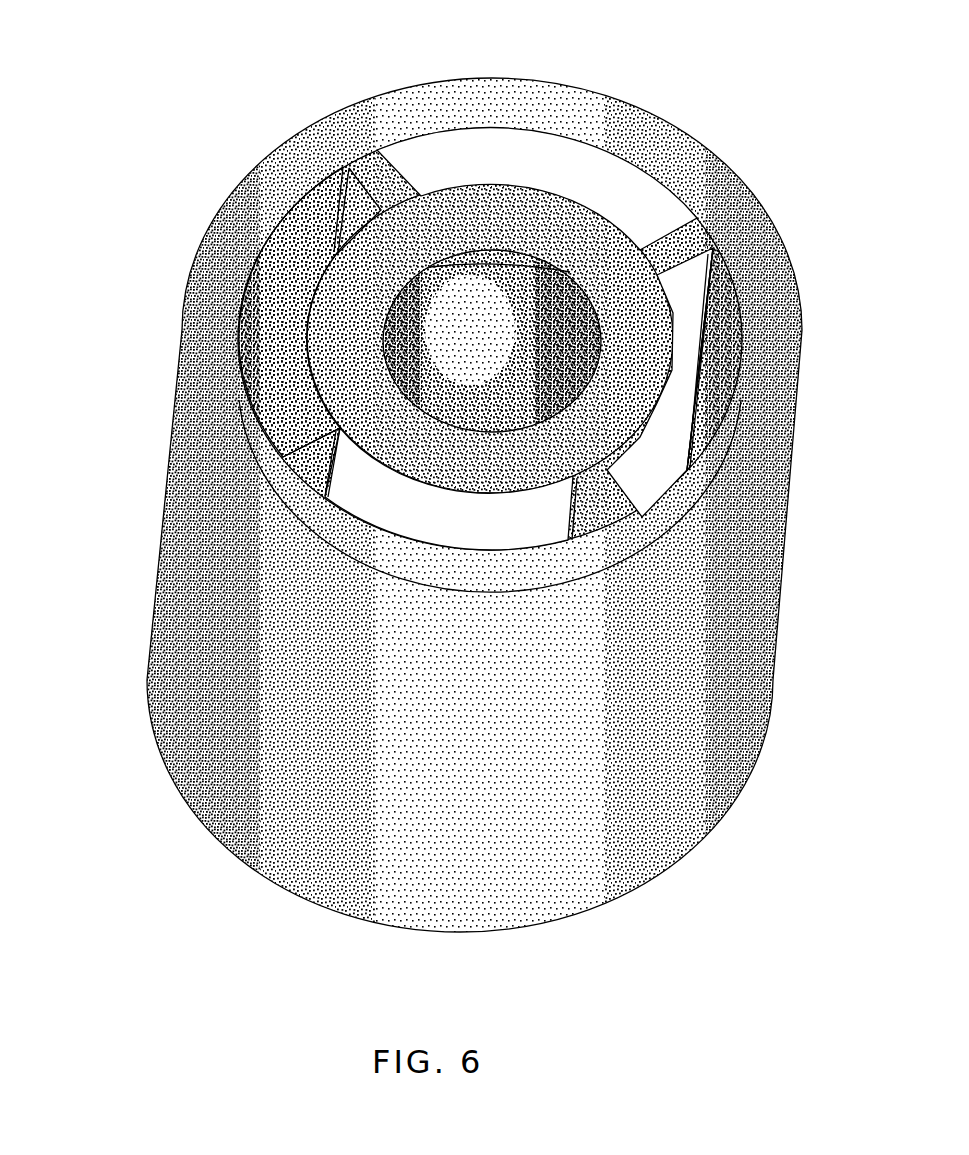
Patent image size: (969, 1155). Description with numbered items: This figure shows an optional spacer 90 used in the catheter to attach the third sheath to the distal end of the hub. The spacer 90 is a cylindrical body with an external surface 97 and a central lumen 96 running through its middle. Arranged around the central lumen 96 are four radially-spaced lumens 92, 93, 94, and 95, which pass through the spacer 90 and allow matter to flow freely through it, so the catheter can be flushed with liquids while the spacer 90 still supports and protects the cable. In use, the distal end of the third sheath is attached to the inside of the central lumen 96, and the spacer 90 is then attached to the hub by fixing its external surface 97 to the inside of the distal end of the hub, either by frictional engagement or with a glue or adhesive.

The spacer 90 is at (287, 157).
The radially-spaced lumen 92 is at (537, 147).
The radially-spaced lumen 93 is at (730, 340).
The radially-spaced lumen 94 is at (330, 480).
The radially-spaced lumen 95 is at (262, 300).
The central lumen 96 is at (437, 267).
The external surface 97 is at (753, 698).